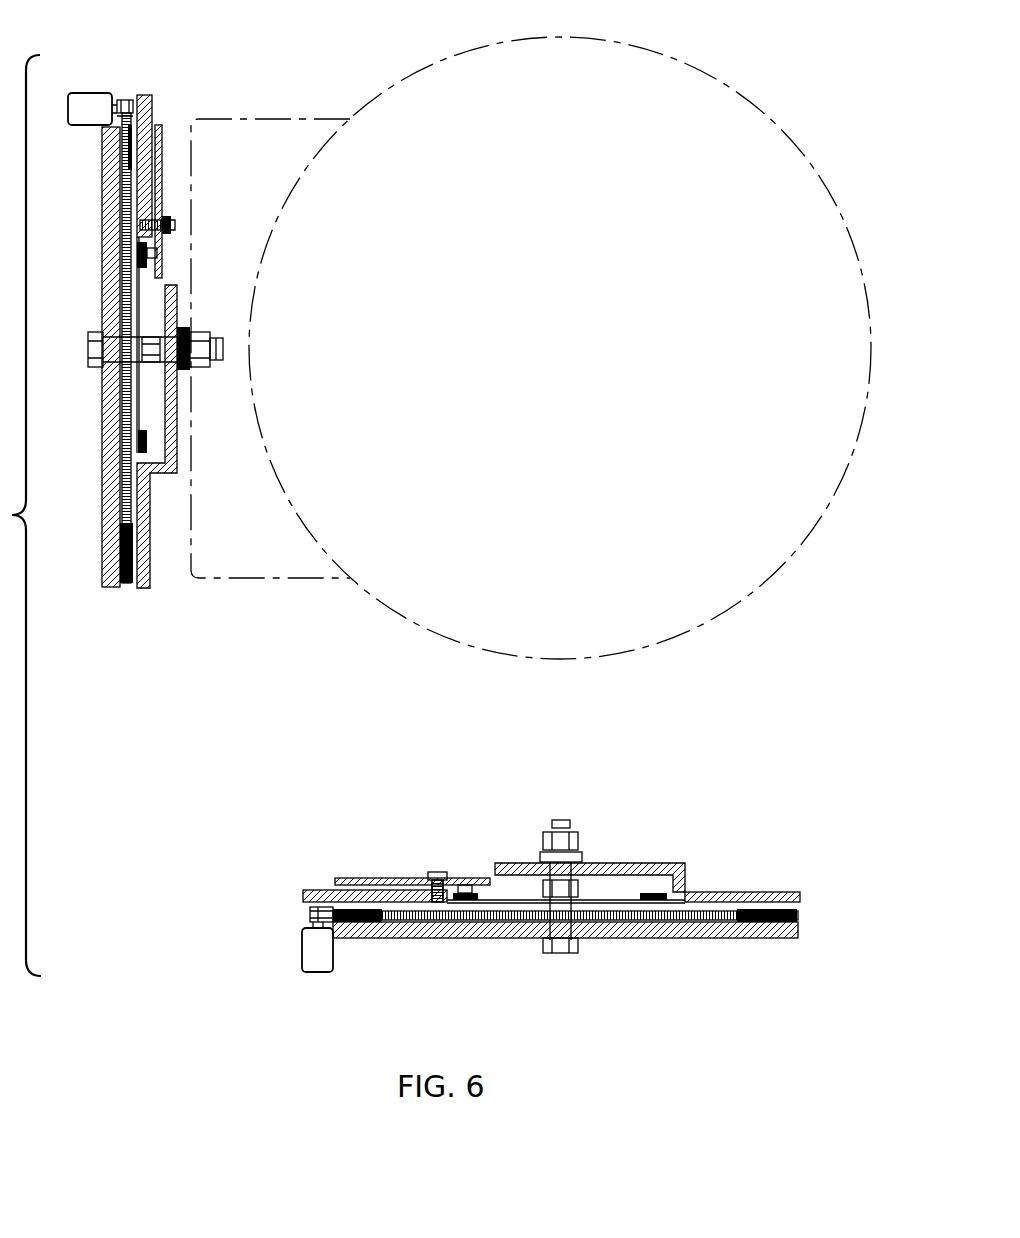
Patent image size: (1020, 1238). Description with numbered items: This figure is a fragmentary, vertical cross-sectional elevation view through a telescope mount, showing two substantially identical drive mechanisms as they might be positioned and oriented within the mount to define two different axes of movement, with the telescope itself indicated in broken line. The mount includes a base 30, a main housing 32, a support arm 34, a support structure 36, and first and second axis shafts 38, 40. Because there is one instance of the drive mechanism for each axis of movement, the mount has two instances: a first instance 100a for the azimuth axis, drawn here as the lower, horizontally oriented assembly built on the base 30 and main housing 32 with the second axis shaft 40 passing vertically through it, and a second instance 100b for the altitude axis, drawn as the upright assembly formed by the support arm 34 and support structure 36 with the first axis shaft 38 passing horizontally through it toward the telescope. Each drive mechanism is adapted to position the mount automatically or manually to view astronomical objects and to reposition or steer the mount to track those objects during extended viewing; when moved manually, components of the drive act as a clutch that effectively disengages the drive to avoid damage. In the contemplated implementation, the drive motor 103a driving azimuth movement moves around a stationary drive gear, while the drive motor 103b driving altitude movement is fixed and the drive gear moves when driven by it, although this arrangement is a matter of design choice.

The base 30 is at (678, 938).
The main housing 32 is at (733, 892).
The support arm 34 is at (105, 467).
The support structure 36 is at (173, 443).
The first axis shaft 38 is at (170, 387).
The second axis shaft 40 is at (560, 880).
The first instance of the drive mechanism 100a is at (452, 798).
The second instance of the drive mechanism 100b is at (228, 632).
The drive motor 103a is at (315, 960).
The drive motor 103b is at (93, 93).